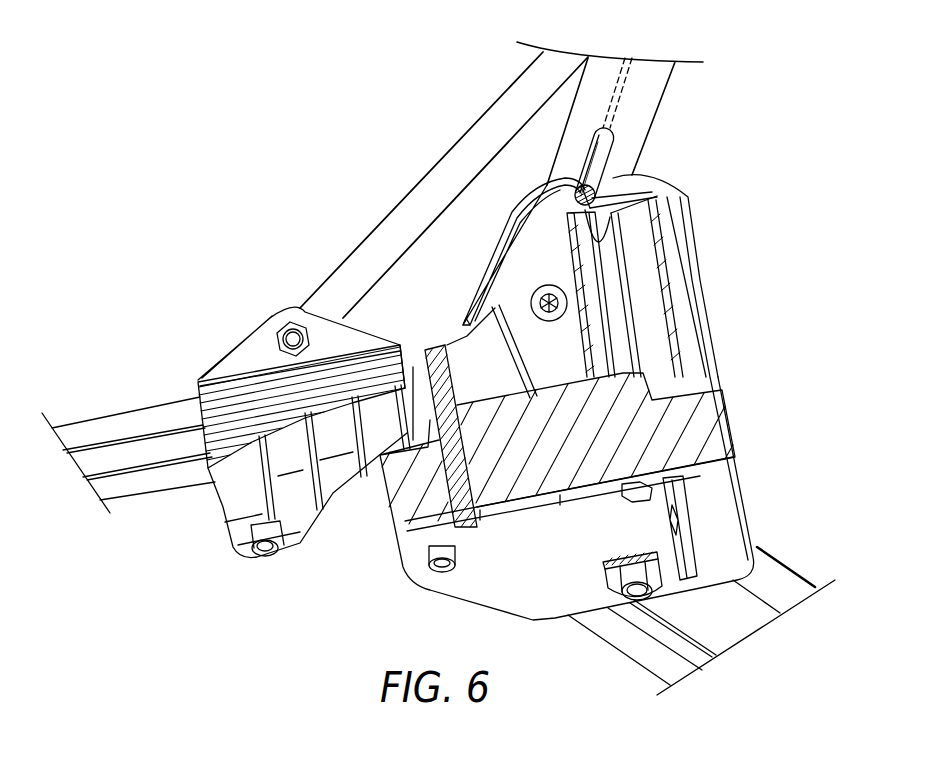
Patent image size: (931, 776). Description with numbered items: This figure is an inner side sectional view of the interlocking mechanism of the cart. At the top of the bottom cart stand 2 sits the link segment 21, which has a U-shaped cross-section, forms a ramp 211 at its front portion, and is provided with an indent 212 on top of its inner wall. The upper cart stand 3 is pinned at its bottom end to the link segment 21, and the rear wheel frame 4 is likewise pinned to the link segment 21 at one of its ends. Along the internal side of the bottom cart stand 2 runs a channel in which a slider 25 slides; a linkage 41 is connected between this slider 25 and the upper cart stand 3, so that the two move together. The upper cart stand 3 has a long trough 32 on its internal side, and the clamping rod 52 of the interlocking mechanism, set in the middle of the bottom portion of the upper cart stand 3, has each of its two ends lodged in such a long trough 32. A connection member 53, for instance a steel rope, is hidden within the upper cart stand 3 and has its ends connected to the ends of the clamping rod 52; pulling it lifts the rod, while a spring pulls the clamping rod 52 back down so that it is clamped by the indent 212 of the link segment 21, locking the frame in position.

The bottom cart stand 2 is at (133, 423).
The upper cart stand 3 is at (648, 80).
The rear wheel frame 4 is at (785, 587).
The link segment 21 is at (692, 295).
The slider 25 is at (252, 352).
The long trough 32 is at (587, 162).
The linkage 41 is at (472, 148).
The clamping rod 52 is at (637, 197).
The connection member 53 is at (600, 152).
The ramp 211 is at (493, 257).
The indent 212 is at (610, 242).